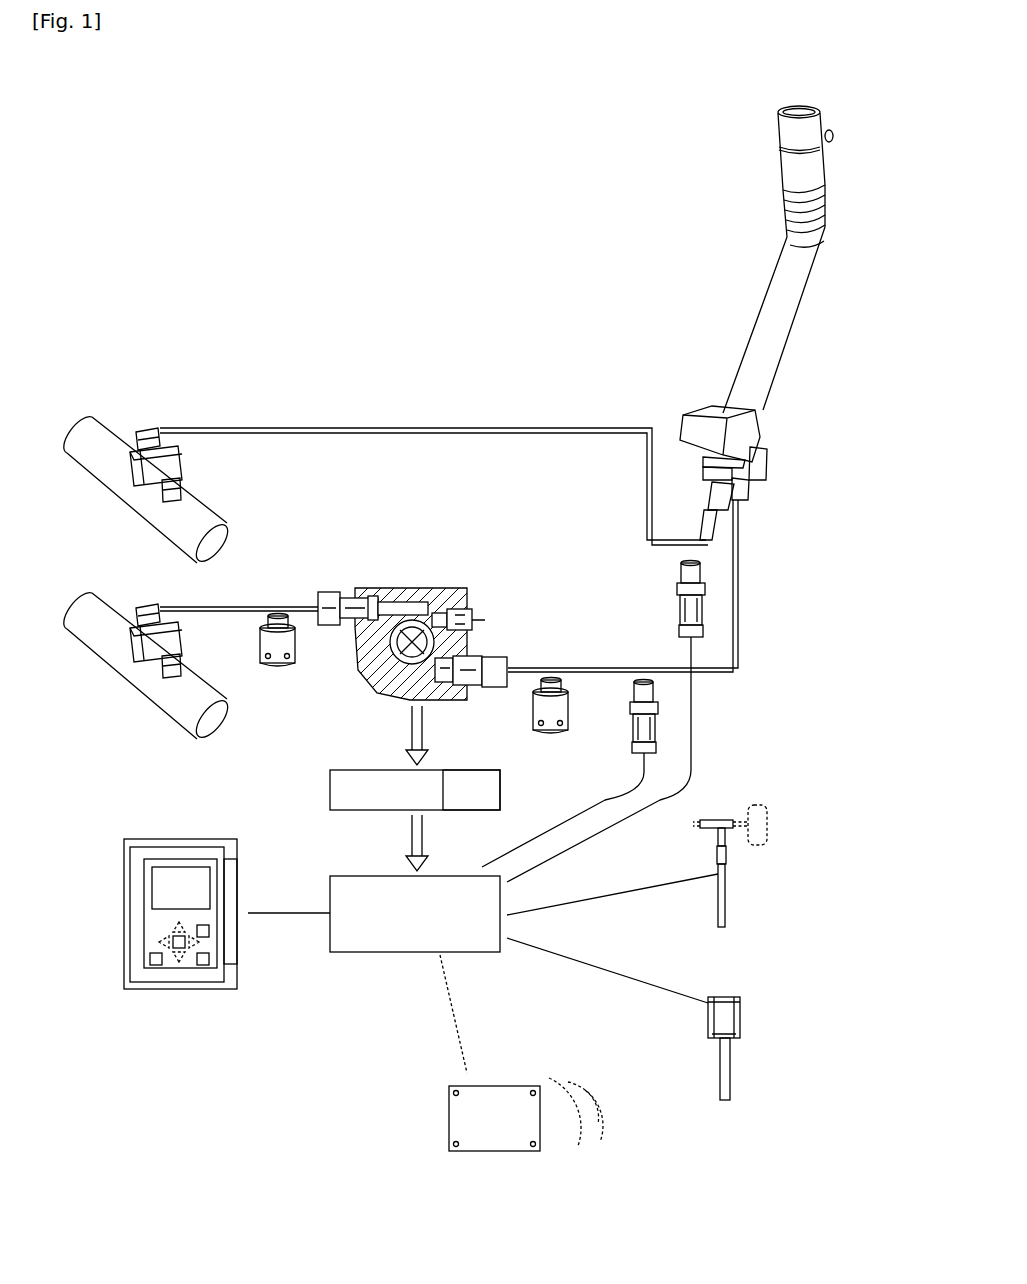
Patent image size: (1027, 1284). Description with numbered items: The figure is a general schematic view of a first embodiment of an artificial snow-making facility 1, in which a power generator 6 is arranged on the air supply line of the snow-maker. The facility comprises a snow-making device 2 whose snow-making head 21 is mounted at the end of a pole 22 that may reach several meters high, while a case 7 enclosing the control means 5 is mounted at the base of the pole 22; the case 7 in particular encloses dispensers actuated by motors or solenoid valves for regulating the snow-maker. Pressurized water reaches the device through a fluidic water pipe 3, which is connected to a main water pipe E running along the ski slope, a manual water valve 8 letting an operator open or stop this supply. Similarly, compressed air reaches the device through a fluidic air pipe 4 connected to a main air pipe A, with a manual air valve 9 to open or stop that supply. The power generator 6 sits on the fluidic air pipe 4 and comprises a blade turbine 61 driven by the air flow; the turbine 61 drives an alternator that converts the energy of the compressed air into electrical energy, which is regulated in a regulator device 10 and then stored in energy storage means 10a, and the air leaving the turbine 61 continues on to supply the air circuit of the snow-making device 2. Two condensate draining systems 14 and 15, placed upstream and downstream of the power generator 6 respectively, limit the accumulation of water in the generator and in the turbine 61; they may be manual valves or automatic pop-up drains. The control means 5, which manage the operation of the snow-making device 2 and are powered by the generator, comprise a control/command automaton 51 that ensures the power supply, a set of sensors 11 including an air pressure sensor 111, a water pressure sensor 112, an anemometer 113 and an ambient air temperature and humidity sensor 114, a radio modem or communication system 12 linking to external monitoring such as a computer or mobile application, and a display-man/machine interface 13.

The artificial snow-making facility 1 is at (420, 343).
The snow-making device 2 is at (742, 234).
The snow-making head 21 is at (763, 136).
The pole 22 is at (765, 330).
The case 7 is at (695, 399).
The fluidic water pipe 3 is at (320, 427).
The fluidic air pipe 4 is at (250, 606).
The manual water valve 8 is at (213, 472).
The manual air valve 9 is at (197, 652).
The main water pipe E is at (113, 465).
The main air pipe A is at (111, 653).
The condensate draining system 14 is at (290, 677).
The condensate draining system 15 is at (518, 712).
The power generator 6 is at (442, 578).
The blade turbine 61 is at (372, 680).
The set of sensors 11 is at (671, 835).
The air pressure sensor 111 is at (614, 737).
The water pressure sensor 112 is at (653, 613).
The anemometer 113 is at (777, 866).
The ambient air temperature and humidity sensor 114 is at (765, 1042).
The regulator device 10 is at (355, 790).
The energy storage means 10a is at (472, 795).
The control means 5 is at (373, 968).
The control/command automaton 51 is at (465, 935).
The display-man/machine interface 13 is at (179, 997).
The communication system 12 is at (429, 1127).